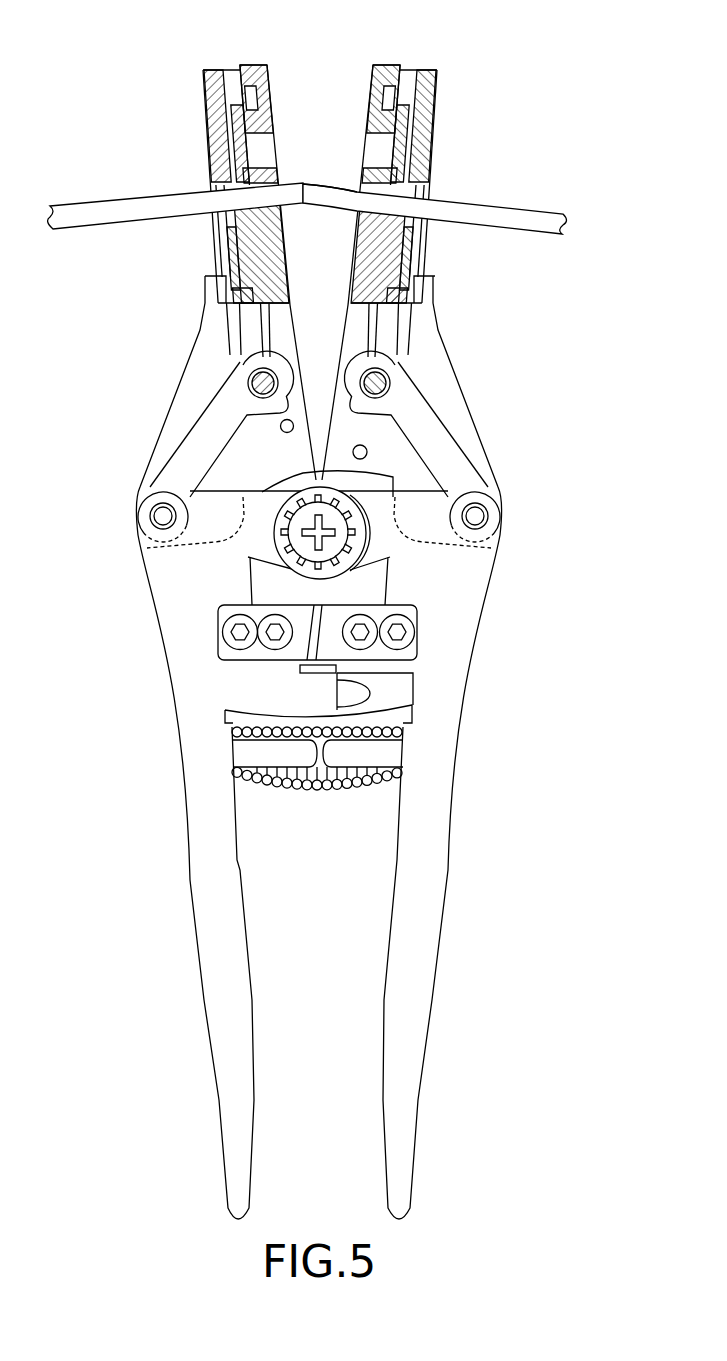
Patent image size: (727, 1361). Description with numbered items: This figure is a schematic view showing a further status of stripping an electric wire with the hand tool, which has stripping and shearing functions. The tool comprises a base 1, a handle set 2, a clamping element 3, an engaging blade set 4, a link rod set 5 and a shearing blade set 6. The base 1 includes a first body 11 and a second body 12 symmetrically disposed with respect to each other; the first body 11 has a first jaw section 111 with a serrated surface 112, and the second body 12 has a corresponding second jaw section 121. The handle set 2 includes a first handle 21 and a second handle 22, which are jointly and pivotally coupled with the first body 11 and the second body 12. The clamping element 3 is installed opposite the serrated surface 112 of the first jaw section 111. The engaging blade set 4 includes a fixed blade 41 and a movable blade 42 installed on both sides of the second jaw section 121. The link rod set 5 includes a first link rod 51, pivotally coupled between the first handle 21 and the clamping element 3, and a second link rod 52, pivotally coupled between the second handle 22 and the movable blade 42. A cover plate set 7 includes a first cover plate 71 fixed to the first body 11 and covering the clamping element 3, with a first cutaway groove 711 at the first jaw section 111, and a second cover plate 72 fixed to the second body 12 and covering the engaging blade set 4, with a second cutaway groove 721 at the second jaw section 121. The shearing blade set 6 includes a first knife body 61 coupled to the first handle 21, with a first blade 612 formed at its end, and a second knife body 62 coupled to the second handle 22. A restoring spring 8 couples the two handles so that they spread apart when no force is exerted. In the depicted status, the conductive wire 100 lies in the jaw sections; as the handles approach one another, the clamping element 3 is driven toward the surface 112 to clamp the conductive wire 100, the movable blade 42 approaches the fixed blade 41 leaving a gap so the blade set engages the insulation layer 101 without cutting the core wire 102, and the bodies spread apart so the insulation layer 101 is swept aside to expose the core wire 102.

The base 1 is at (245, 62).
The first body 11 is at (258, 68).
The clamping element 3 is at (228, 100).
The cover plate set 7 is at (203, 88).
The first cover plate 71 is at (233, 114).
The first cutaway groove 711 is at (213, 128).
The surface 112 is at (232, 190).
The first jaw section 111 is at (240, 210).
The core wire 102 is at (333, 190).
The second body 12 is at (387, 70).
The second cover plate 72 is at (430, 92).
The engaging blade set 4 is at (420, 117).
The second cutaway groove 721 is at (430, 130).
The movable blade 42 is at (407, 170).
The fixed blade 41 is at (397, 245).
The second jaw section 121 is at (432, 266).
The conductive wire 100 is at (500, 200).
The insulation layer 101 is at (530, 210).
The link rod set 5 is at (438, 398).
The first link rod 51 is at (185, 465).
The second link rod 52 is at (460, 455).
The shearing blade set 6 is at (420, 612).
The first knife body 61 is at (260, 653).
The second knife body 62 is at (380, 652).
The first blade 612 is at (367, 680).
The restoring spring 8 is at (322, 637).
The handle set 2 is at (447, 918).
The first handle 21 is at (209, 944).
The second handle 22 is at (424, 1000).